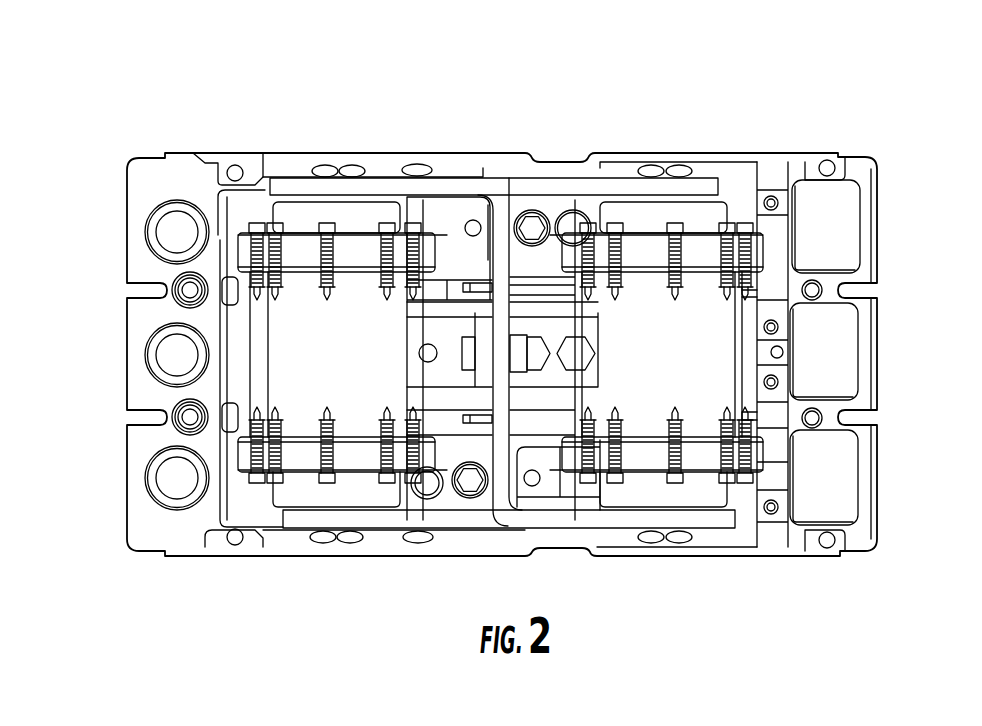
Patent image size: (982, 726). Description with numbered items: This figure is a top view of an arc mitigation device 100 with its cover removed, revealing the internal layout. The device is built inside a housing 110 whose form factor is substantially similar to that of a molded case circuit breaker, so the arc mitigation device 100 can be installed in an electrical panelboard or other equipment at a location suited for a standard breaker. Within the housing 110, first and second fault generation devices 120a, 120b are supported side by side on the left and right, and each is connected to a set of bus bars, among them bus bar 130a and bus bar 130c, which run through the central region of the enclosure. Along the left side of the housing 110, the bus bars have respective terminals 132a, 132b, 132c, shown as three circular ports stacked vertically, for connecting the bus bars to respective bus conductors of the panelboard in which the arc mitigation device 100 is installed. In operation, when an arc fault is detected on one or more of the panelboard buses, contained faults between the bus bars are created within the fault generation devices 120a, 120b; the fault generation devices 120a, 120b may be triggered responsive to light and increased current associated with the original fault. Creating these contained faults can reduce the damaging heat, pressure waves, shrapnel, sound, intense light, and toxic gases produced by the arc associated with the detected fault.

The arc mitigation device 100 is at (222, 90).
The housing 110 is at (253, 155).
The first fault generation device 120a is at (717, 295).
The second fault generation device 120b is at (298, 425).
The bus bar 130a is at (453, 218).
The bus bar 130c is at (588, 502).
The terminal 132a is at (167, 253).
The terminal 132b is at (165, 378).
The terminal 132c is at (165, 503).